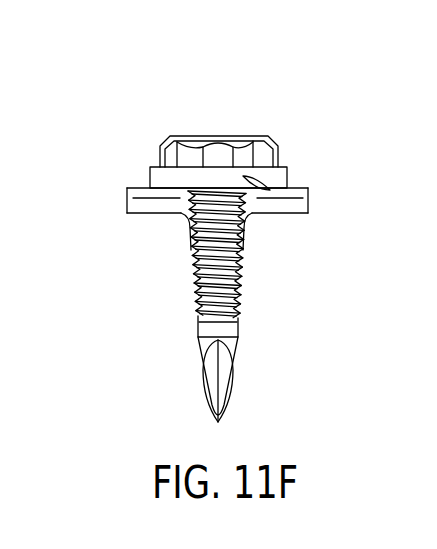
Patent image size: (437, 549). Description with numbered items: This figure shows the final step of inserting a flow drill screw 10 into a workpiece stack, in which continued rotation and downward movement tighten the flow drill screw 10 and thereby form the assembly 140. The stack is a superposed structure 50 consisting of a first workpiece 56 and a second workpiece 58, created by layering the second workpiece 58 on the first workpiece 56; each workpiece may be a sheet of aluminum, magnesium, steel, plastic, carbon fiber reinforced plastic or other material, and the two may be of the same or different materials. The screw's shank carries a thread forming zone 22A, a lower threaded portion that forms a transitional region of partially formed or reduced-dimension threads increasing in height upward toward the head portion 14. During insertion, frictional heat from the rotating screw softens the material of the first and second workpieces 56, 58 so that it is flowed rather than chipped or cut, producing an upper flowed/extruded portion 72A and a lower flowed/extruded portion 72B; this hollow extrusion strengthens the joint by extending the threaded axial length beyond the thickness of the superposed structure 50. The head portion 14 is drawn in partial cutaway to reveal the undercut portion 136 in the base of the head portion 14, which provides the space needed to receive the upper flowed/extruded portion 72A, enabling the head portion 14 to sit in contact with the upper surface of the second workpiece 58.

The flow drill screw 10 is at (203, 120).
The head portion 14 is at (162, 143).
The thread forming zone 22A is at (247, 233).
The superposed structure 50 is at (320, 202).
The first workpiece 56 is at (132, 213).
The second workpiece 58 is at (127, 188).
The upper flowed/extruded portion 72A is at (245, 180).
The lower flowed/extruded portion 72B is at (187, 220).
The undercut portion 136 is at (262, 186).
The assembly 140 is at (323, 105).